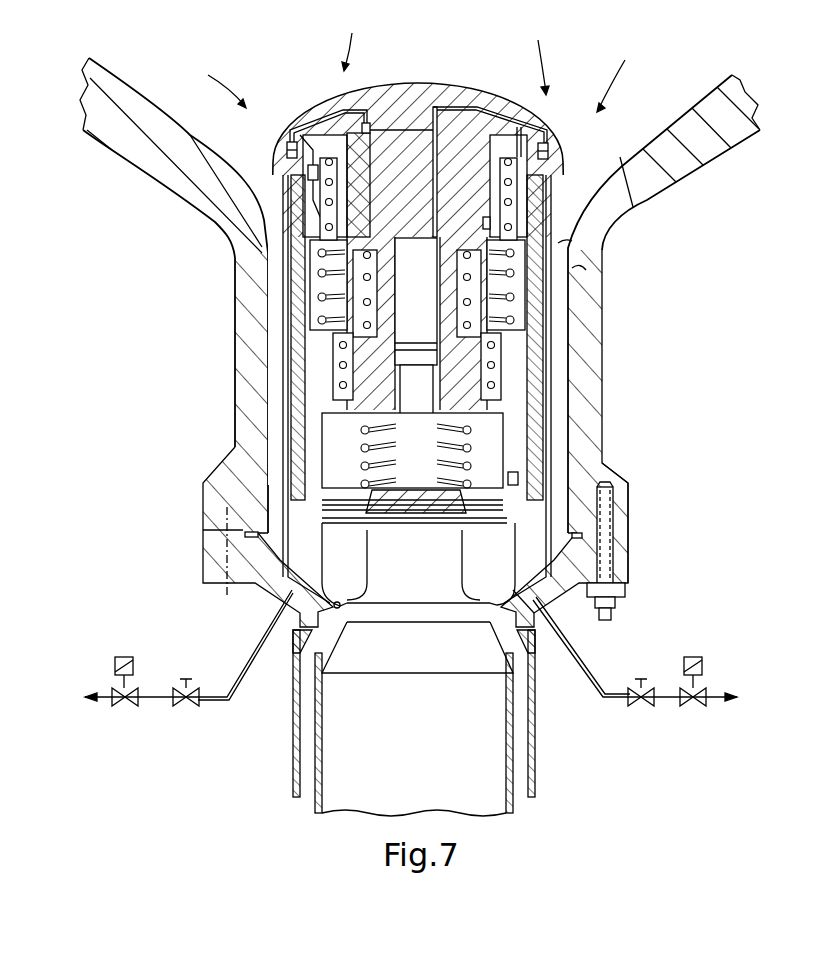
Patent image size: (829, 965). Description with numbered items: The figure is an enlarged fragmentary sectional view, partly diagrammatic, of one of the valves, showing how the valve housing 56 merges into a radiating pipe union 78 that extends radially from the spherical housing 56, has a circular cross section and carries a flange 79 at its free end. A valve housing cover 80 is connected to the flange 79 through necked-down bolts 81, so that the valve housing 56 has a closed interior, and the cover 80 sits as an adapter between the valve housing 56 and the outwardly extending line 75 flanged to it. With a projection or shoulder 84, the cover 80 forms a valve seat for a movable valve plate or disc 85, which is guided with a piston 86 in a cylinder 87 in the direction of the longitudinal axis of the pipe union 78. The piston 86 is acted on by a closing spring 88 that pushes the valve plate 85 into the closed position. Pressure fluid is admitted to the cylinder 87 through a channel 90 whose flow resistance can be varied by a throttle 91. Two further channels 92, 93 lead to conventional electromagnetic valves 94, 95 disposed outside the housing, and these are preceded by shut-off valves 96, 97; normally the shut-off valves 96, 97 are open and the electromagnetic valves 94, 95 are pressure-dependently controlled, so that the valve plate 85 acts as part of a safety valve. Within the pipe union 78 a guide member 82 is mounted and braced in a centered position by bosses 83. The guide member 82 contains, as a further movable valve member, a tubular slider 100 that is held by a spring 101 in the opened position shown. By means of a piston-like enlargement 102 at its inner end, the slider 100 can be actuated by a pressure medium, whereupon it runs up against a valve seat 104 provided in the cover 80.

The valve housing 56 is at (692, 168).
The outwardly extending line 75 is at (520, 777).
The pipe union 78 is at (593, 378).
The flange 79 is at (623, 508).
The valve housing cover 80 is at (240, 575).
The necked-down bolts 81 is at (608, 557).
The guide member 82 is at (287, 407).
The bosses 83 is at (277, 258).
The shoulder 84 is at (336, 600).
The valve plate 85 is at (390, 580).
The piston 86 is at (487, 507).
The cylinder 87 is at (500, 421).
The closing spring 88 is at (505, 303).
The channel 90 is at (520, 483).
The throttle 91 is at (520, 462).
The channel 92 is at (283, 357).
The channel 93 is at (586, 270).
The electromagnetic valve 94 is at (122, 706).
The electromagnetic valve 95 is at (700, 688).
The shut-off valve 96 is at (166, 706).
The shut-off valve 97 is at (630, 706).
The tubular slider 100 is at (572, 241).
The spring 101 is at (545, 172).
The piston-like enlargement 102 is at (523, 116).
The valve seat 104 is at (530, 600).